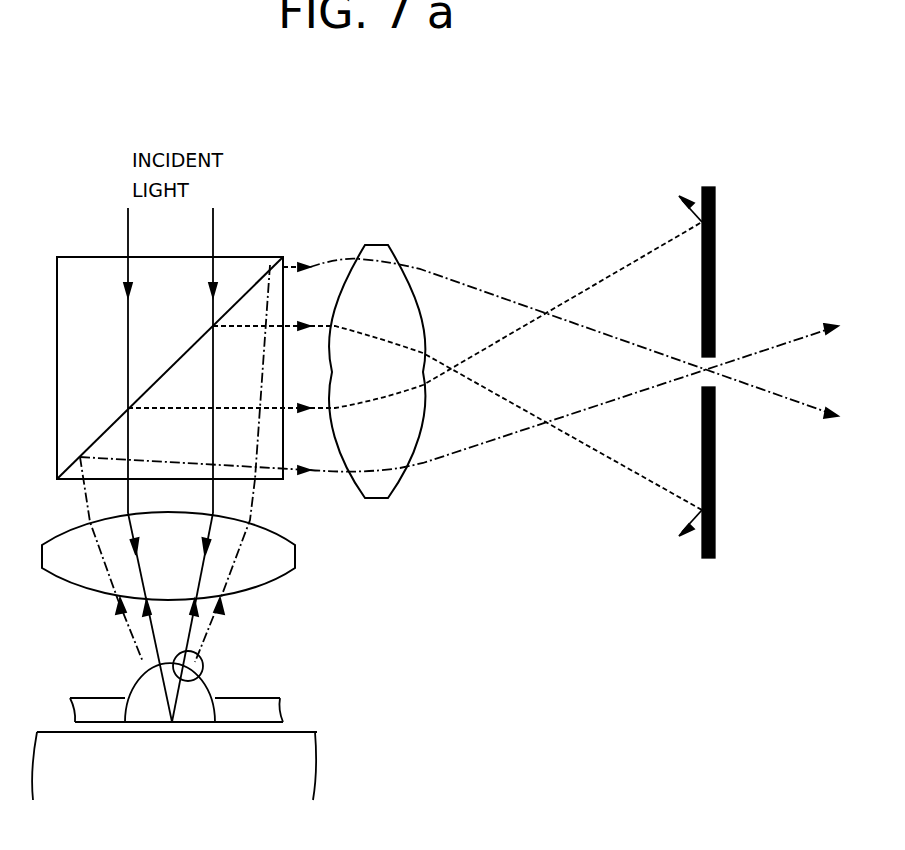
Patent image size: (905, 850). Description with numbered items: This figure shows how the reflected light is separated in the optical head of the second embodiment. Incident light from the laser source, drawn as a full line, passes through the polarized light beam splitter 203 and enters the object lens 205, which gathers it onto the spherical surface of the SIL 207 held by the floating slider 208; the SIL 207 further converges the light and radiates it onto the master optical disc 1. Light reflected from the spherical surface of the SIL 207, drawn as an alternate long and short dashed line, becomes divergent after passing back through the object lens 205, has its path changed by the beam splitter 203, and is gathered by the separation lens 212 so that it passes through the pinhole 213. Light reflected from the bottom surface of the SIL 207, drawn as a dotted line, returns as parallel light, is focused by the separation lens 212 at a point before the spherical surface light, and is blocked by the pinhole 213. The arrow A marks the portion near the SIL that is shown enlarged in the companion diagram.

The polarized light beam splitter 203 is at (92, 265).
The separation lens 212 is at (378, 245).
The pinhole 213 is at (715, 203).
The object lens 205 is at (62, 572).
The arrow A is at (206, 656).
The SIL 207 is at (203, 690).
The floating slider 208 is at (265, 710).
The master optical disc 1 is at (285, 762).